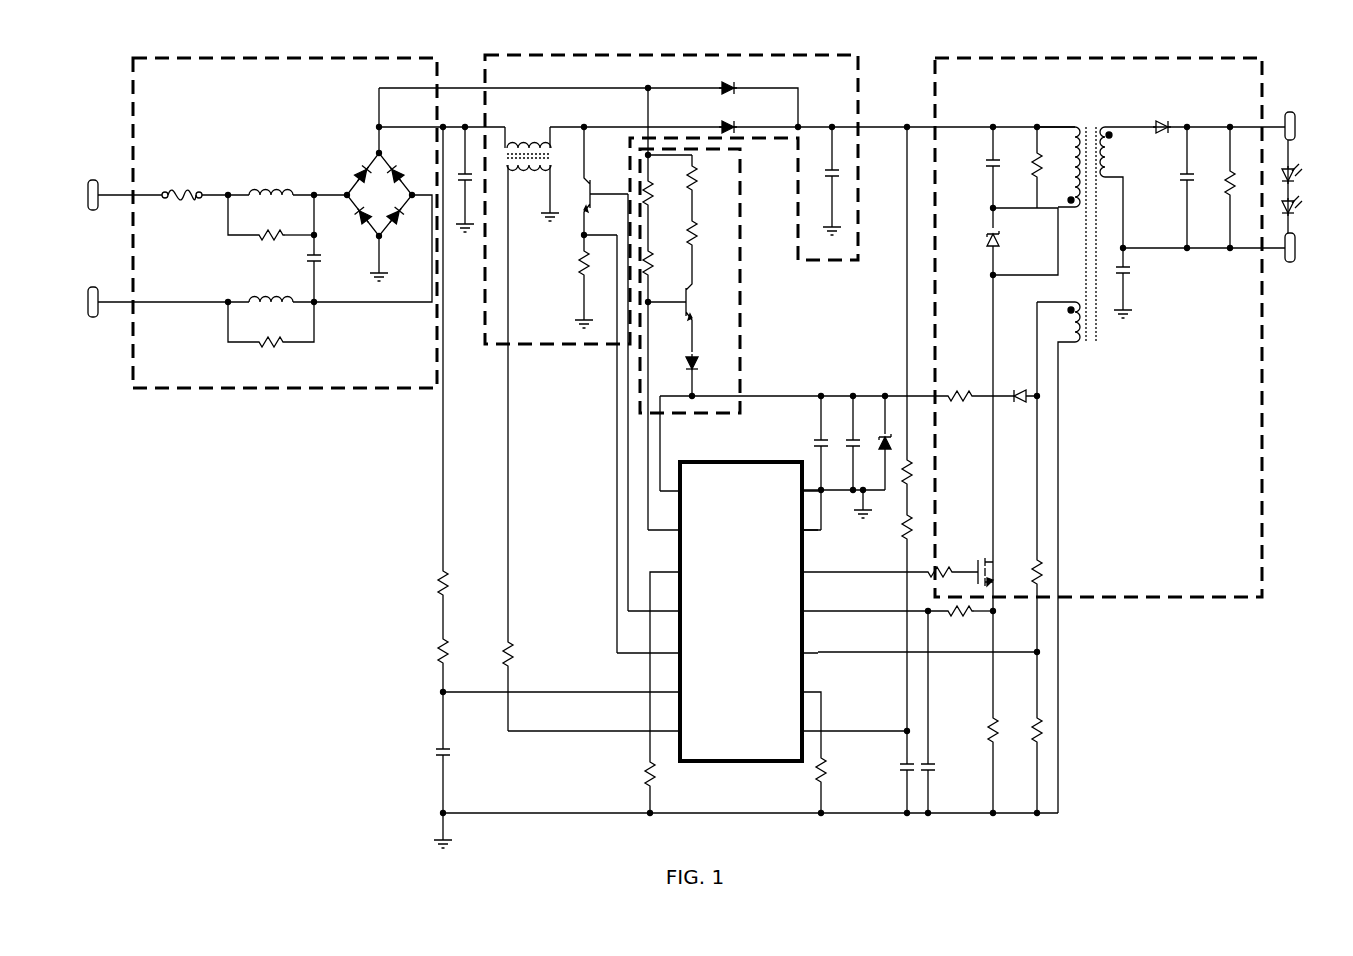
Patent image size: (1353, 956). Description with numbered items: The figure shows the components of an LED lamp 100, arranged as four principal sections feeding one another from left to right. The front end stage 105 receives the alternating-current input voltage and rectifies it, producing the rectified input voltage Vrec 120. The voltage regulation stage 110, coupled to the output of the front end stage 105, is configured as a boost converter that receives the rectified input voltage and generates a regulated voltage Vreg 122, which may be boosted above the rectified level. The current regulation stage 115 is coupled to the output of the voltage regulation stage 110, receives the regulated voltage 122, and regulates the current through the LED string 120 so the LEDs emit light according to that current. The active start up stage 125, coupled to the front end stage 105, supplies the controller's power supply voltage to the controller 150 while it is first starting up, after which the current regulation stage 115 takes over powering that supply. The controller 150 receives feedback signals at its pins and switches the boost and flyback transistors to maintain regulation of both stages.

The LED lamp 100 is at (141, 24).
The front end stage 105 is at (257, 208).
The voltage regulation stage 110 is at (673, 341).
The current regulation stage 115 is at (1051, 421).
The rectified input voltage (Vrec) / LEDs 120 is at (835, 171).
The regulated voltage (Vreg) 122 is at (909, 444).
The active start up (ASU) stage 125 is at (742, 288).
The controller IC 150 is at (741, 626).